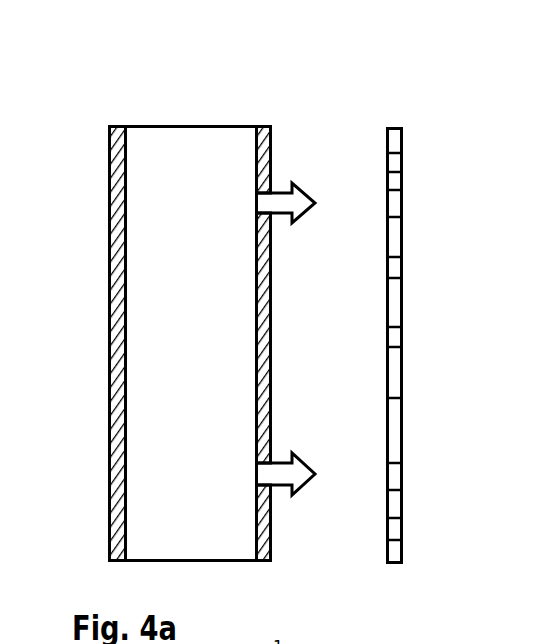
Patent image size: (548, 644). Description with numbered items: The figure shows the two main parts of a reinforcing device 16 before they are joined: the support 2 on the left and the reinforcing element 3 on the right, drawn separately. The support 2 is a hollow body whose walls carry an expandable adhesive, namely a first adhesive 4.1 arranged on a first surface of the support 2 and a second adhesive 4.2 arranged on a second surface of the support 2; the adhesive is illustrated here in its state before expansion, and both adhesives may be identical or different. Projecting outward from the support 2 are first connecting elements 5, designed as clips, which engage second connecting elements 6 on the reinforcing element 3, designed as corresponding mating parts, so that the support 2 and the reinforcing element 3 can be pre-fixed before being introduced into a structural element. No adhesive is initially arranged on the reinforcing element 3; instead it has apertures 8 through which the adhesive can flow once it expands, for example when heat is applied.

The support 2 is at (195, 152).
The reinforcing element 3 is at (440, 303).
The first adhesive 4.1 is at (268, 351).
The second adhesive 4.2 is at (110, 305).
The first connecting elements 5 is at (302, 212).
The second connecting elements 6 is at (398, 203).
The apertures 8 is at (398, 268).
The reinforcing device 16 is at (192, 286).